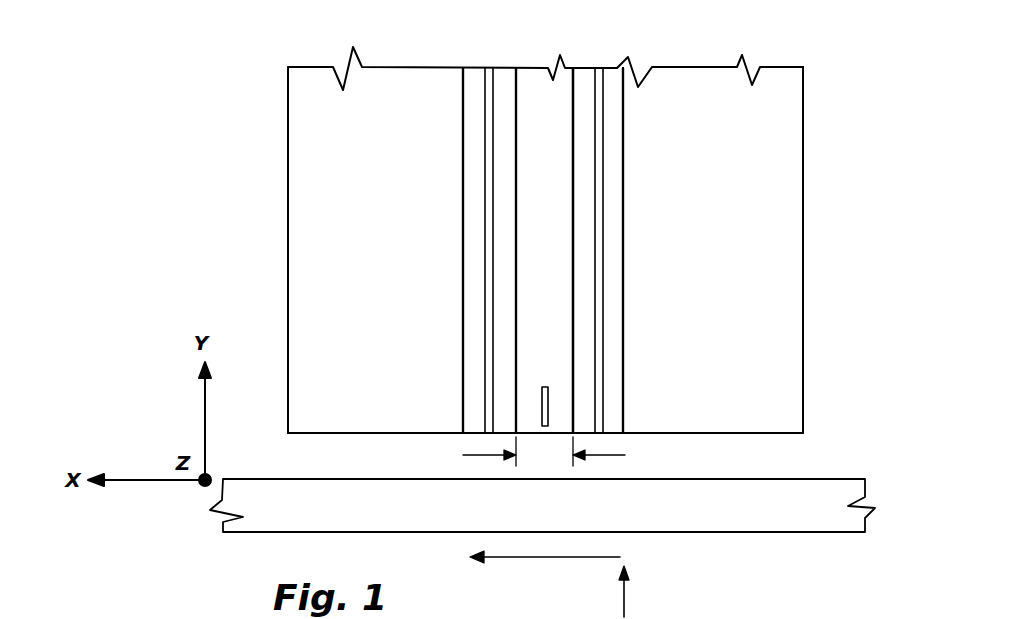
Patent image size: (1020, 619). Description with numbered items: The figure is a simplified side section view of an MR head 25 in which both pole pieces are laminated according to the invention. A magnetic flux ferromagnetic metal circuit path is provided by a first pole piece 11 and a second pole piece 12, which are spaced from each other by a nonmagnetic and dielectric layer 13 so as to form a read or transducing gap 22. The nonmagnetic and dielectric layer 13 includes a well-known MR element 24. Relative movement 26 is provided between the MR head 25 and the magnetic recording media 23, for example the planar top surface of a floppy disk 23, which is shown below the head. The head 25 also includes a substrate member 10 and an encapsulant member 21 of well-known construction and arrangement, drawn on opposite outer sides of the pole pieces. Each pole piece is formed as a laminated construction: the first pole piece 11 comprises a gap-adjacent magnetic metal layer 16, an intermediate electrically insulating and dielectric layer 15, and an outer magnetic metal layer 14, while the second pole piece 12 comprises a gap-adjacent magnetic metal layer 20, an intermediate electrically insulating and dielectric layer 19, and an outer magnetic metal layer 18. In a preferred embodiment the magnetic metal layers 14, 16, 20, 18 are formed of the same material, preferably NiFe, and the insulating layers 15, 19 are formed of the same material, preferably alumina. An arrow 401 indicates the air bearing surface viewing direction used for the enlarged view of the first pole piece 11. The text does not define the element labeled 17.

The substrate member 10 is at (770, 208).
The first pole piece 11 is at (573, 58).
The second pole piece 12 is at (465, 58).
The nonmagnetic and dielectric layer 13 is at (570, 58).
The outer magnetic metal layer 14 is at (618, 101).
The intermediate electrically insulating and dielectric layer 15 is at (598, 140).
The gap-adjacent magnetic metal layer 16 is at (587, 199).
The pole layer 17 is at (550, 253).
The outer magnetic metal layer 18 is at (472, 126).
The intermediate electrically insulating and dielectric layer 19 is at (486, 193).
The gap-adjacent magnetic metal layer 20 is at (497, 278).
The encapsulant member 21 is at (332, 232).
The read or transducing gap 22 is at (607, 455).
The magnetic recording media 23 is at (785, 490).
The MR element 24 is at (549, 401).
The MR head 25 is at (843, 104).
The relative movement 26 is at (570, 559).
The arrow 401 is at (625, 601).